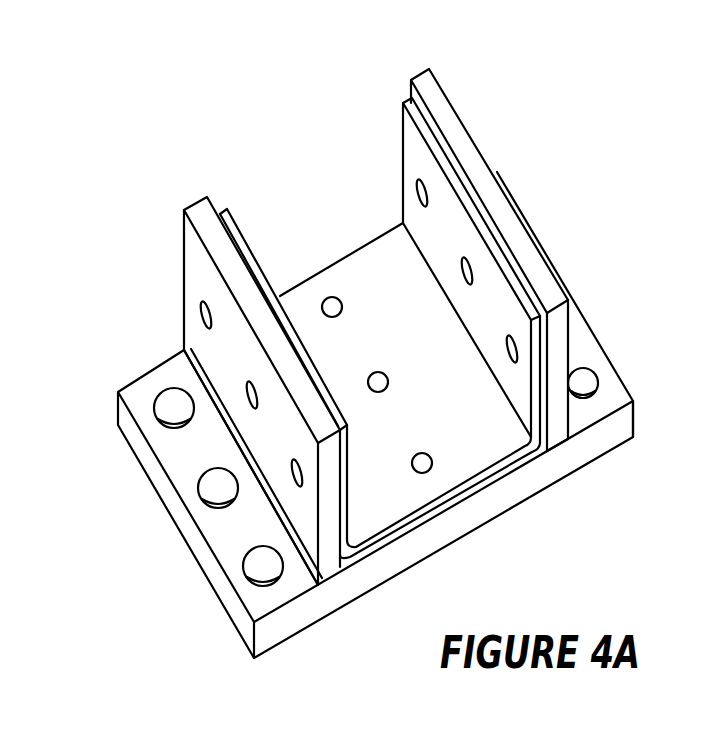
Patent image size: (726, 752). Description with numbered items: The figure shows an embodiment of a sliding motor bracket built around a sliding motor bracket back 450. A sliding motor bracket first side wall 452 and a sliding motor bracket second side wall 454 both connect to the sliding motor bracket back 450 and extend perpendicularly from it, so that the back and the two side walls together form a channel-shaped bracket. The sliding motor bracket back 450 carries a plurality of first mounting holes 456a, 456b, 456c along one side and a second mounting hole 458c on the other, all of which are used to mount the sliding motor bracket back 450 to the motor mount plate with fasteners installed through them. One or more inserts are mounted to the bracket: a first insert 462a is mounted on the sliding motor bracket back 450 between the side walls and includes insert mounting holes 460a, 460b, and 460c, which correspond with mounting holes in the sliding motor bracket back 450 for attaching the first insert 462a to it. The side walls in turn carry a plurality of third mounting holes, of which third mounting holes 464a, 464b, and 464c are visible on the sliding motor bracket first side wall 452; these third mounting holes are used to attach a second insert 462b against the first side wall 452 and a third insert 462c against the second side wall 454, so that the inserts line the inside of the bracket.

The sliding motor bracket back 450 is at (513, 487).
The sliding motor bracket first side wall 452 is at (205, 212).
The sliding motor bracket second side wall 454 is at (432, 86).
The first mounting hole 456a is at (155, 400).
The first mounting hole 456b is at (200, 473).
The first mounting hole 456c is at (247, 553).
The second mounting hole 458c is at (584, 368).
The insert mounting hole 460a is at (342, 300).
The insert mounting hole 460b is at (413, 358).
The insert mounting hole 460c is at (457, 435).
The first insert 462a is at (383, 245).
The second insert 462b is at (240, 228).
The third insert 462c is at (410, 135).
The third mounting hole 464a is at (200, 308).
The third mounting hole 464b is at (248, 387).
The third mounting hole 464c is at (293, 465).